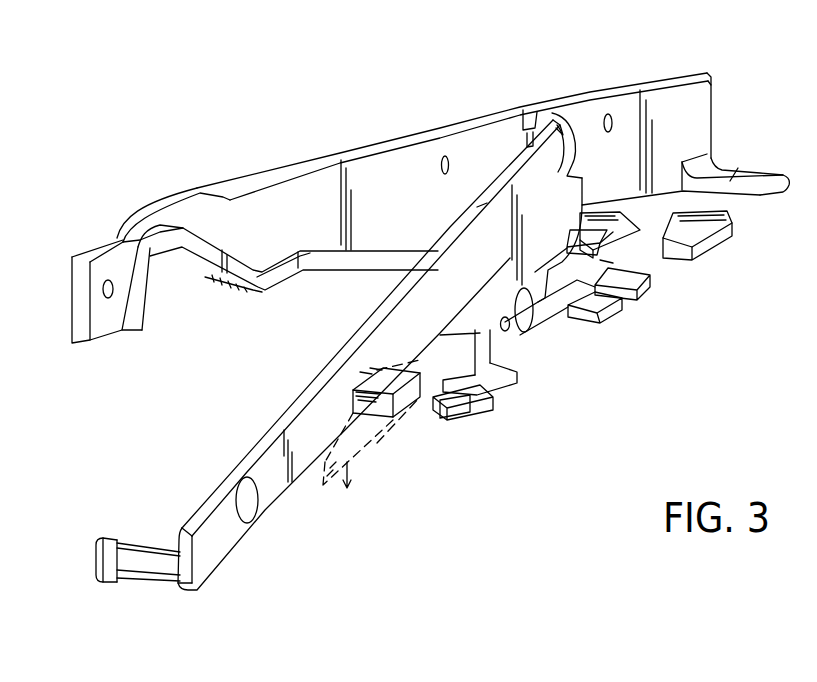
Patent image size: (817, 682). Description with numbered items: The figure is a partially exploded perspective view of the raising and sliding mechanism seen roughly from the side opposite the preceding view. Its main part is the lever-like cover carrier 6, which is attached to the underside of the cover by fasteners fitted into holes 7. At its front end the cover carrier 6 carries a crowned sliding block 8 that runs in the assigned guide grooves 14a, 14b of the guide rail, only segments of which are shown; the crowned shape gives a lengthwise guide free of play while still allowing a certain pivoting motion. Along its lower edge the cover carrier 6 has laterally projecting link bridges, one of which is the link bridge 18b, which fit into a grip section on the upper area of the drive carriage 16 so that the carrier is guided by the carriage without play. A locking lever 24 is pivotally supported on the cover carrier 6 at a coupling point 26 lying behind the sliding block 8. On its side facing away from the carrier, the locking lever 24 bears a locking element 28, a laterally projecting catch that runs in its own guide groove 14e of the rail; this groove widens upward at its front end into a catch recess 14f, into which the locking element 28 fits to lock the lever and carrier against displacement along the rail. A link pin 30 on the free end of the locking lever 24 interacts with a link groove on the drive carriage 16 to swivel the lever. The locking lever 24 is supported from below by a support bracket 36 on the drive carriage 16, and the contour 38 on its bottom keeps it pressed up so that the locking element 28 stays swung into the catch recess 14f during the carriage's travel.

The cover carrier 6 is at (380, 177).
The holes 7 is at (108, 300).
The sliding block 8 is at (762, 167).
The guide groove 14a is at (620, 237).
The guide groove 14b is at (683, 250).
The guide groove 14e is at (348, 500).
The catch recess 14f is at (457, 410).
The drive carriage 16 is at (568, 348).
The link bridge 18b is at (322, 258).
The locking lever 24 is at (298, 463).
The coupling point 26 is at (575, 130).
The locking element 28 is at (407, 392).
The link pin 30 is at (143, 563).
The support bracket 36 is at (513, 345).
The contour 38 is at (281, 497).